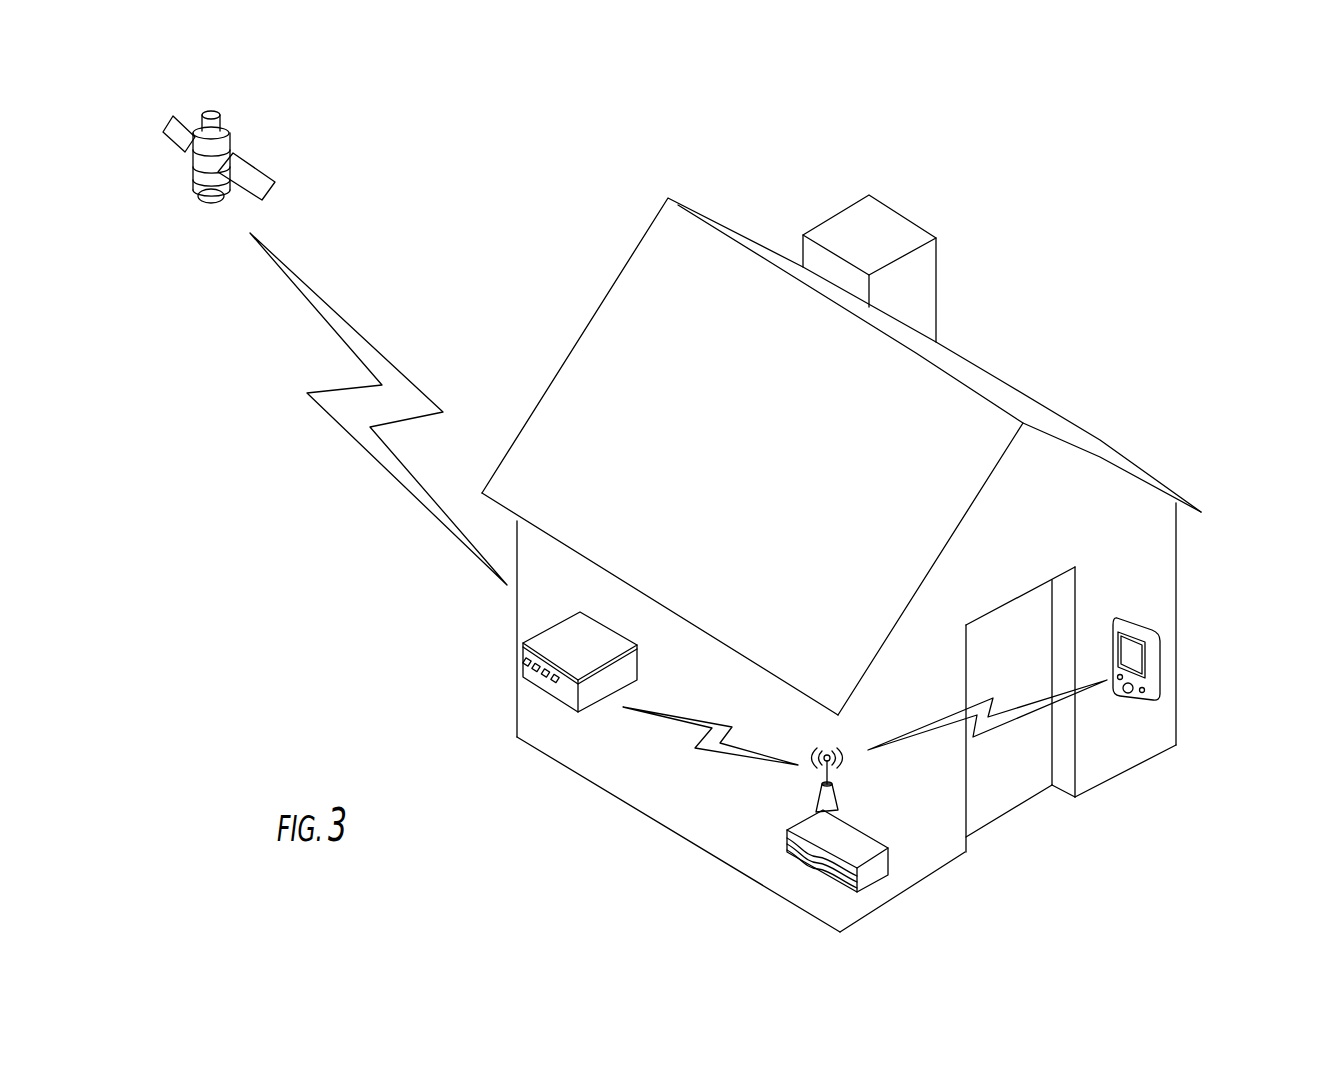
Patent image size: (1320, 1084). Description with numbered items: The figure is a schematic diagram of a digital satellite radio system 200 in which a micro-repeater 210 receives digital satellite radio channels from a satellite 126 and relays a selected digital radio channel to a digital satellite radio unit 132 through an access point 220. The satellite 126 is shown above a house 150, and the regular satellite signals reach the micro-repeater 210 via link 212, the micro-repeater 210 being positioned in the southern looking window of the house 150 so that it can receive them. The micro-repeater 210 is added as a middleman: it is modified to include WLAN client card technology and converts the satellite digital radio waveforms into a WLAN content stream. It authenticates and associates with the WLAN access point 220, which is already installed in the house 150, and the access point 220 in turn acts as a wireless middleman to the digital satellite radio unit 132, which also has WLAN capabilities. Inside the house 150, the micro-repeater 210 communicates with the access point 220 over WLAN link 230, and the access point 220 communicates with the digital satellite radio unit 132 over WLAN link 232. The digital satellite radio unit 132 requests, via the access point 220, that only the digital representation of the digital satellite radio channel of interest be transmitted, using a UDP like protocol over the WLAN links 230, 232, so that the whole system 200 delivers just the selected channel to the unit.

The satellite 126 is at (231, 134).
The link 212 is at (347, 320).
The house 150 is at (697, 212).
The digital satellite radio system 200 is at (1183, 222).
The micro-repeater 210 is at (523, 665).
The access point 220 is at (826, 754).
The WLAN link 230 is at (683, 724).
The WLAN link 232 is at (1023, 718).
The digital satellite radio unit 132 is at (1158, 634).